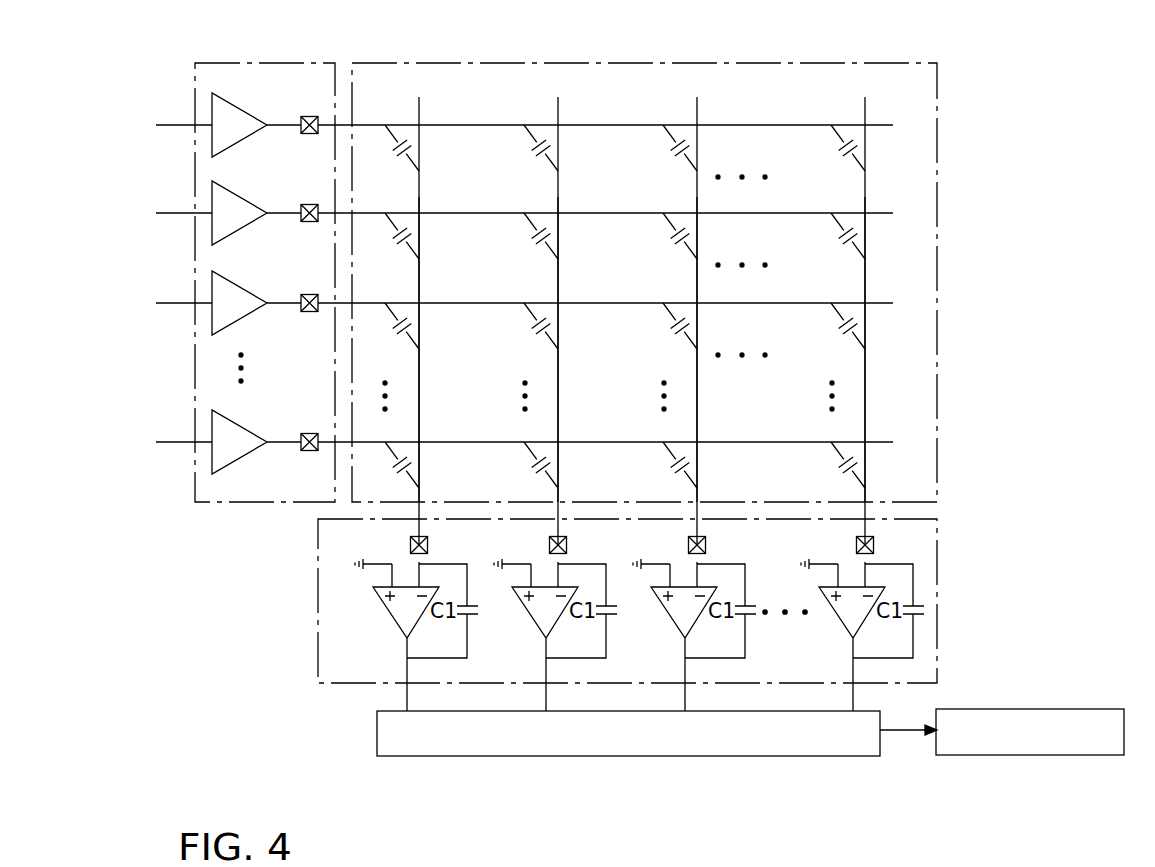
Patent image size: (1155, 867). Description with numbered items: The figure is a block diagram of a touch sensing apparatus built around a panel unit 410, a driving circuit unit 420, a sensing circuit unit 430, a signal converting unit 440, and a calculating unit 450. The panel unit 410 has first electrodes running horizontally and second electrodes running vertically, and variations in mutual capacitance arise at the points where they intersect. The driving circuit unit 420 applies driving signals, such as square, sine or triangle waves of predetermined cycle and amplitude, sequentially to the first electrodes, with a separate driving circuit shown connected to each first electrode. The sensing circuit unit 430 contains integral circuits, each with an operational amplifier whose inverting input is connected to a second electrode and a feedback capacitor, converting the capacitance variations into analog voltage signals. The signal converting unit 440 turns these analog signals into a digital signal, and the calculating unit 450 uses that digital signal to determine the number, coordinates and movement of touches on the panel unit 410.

The panel unit 410 is at (660, 62).
The driving circuit unit 420 is at (262, 63).
The sensing circuit unit 430 is at (318, 603).
The signal converting unit 440 is at (630, 757).
The calculating unit 450 is at (1098, 757).